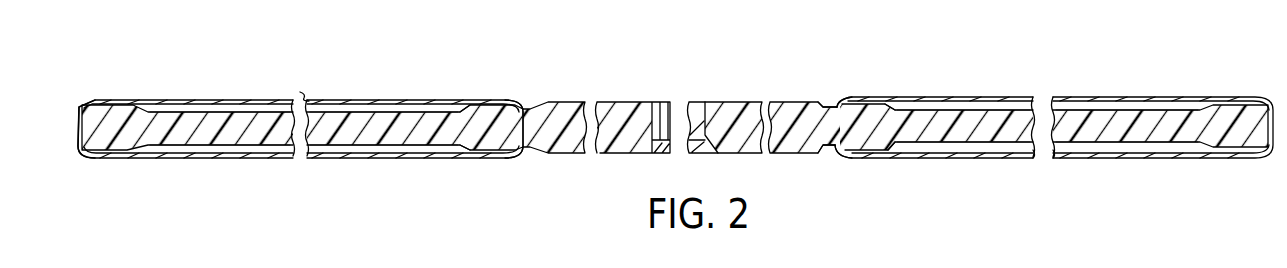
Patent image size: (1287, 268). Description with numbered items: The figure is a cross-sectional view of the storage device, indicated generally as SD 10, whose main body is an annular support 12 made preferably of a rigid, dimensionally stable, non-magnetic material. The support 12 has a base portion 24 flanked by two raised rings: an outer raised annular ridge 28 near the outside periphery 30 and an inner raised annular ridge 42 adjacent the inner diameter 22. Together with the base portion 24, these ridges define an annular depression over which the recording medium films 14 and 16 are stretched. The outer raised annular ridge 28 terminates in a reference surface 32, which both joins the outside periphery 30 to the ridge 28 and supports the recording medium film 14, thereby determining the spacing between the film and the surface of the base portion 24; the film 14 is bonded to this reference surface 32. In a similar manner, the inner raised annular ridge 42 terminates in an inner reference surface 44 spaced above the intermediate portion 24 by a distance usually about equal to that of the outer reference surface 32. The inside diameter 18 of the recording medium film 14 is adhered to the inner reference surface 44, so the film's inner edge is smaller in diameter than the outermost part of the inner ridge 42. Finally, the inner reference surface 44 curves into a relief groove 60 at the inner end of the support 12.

The SD 10 is at (1084, 78).
The annular support 12 is at (607, 154).
The recording medium film 14 is at (1040, 96).
The recording medium film 16 is at (1040, 160).
The inside diameter of the recording medium film 18 is at (841, 97).
The inner diameter of the support 22 is at (707, 122).
The base portion 24 is at (277, 110).
The outer raised annular ridge 28 is at (163, 108).
The outside periphery 30 is at (82, 146).
The reference surface 32 is at (124, 100).
The inner raised annular ridge 42 is at (461, 107).
The inner reference surface 44 is at (484, 100).
The relief groove 60 is at (829, 104).